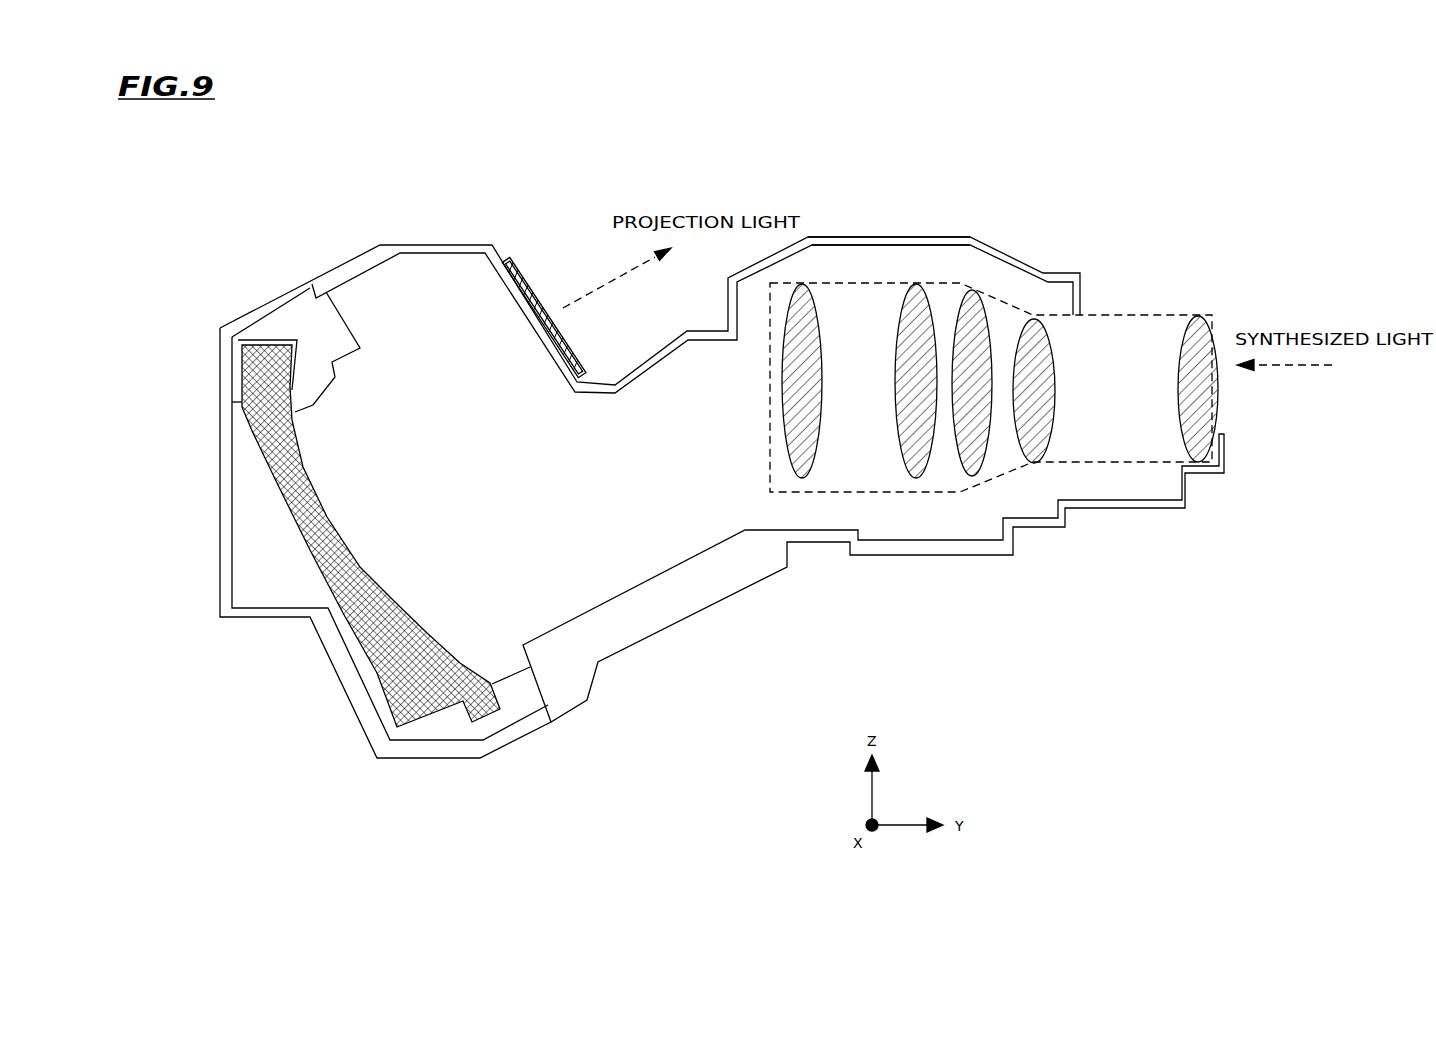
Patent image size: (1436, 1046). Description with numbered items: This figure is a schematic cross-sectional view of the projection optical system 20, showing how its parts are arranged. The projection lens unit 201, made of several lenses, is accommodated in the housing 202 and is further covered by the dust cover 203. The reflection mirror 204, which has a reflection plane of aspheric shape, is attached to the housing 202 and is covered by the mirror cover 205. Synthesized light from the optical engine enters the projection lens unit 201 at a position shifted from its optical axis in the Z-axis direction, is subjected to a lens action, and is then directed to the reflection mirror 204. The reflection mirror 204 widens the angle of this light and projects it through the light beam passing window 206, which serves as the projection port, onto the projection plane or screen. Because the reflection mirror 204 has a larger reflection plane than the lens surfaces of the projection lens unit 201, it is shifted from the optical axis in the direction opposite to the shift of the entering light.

The projection optical system 20 is at (918, 596).
The projection lens unit 201 is at (961, 287).
The housing 202 is at (635, 630).
The dust cover 203 is at (850, 241).
The reflection mirror 204 is at (370, 666).
The mirror cover 205 is at (243, 617).
The light beam passing window 206 is at (506, 264).